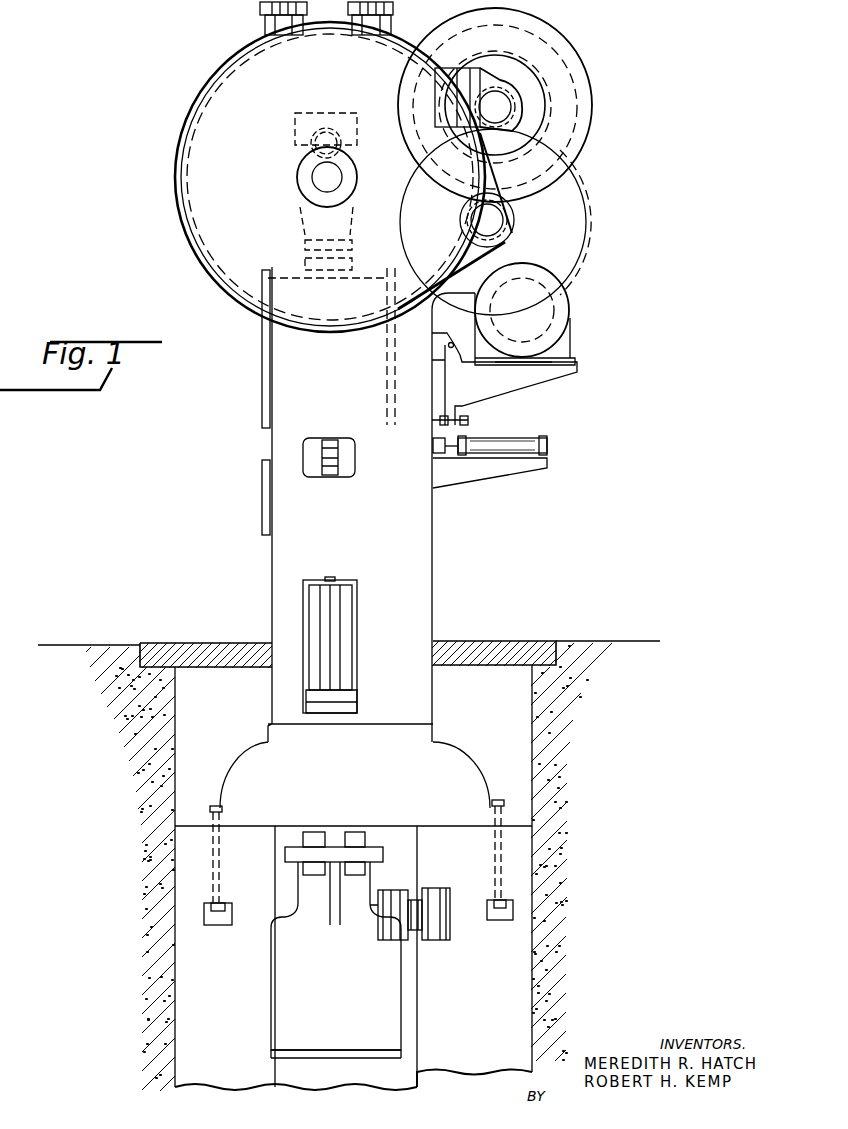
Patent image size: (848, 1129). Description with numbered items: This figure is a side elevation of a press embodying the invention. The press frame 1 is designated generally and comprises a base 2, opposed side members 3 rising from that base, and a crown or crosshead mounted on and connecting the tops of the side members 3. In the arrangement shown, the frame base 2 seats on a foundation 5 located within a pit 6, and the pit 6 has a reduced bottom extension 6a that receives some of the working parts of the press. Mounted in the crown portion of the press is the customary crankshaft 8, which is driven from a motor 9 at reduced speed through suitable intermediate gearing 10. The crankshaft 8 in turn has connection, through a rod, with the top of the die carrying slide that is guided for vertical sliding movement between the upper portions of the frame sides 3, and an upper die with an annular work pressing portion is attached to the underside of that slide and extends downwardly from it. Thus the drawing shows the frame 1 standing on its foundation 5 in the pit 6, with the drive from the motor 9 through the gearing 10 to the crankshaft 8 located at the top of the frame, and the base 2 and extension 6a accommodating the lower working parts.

The press frame 1 is at (440, 558).
The base 2 is at (430, 784).
The side members 3 is at (270, 557).
The foundation 5 is at (516, 970).
The pit 6 is at (516, 774).
The reduced bottom extension 6a is at (408, 1065).
The crankshaft 8 is at (322, 176).
The motor 9 is at (560, 316).
The intermediate gearing 10 is at (591, 179).